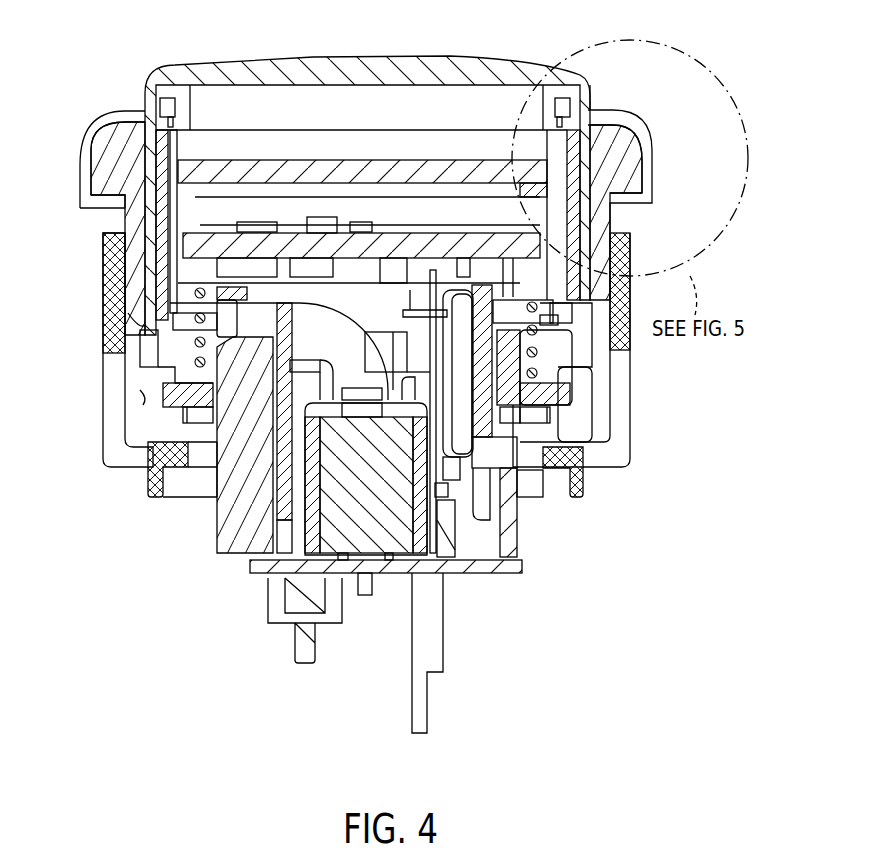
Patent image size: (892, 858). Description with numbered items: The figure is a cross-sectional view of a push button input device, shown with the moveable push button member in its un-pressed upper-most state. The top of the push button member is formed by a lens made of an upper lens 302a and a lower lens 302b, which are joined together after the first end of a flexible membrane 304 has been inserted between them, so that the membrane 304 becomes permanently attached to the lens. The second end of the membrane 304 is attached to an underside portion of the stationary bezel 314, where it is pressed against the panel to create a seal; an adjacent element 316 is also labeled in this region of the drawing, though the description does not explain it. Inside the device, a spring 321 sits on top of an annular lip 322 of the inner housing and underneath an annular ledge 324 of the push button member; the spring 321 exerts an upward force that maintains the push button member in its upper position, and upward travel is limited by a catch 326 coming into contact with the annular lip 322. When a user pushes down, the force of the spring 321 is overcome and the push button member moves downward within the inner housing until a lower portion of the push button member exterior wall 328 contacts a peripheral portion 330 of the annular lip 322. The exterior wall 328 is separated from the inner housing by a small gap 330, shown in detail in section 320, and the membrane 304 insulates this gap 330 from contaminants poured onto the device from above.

The upper lens 302a is at (568, 113).
The lower lens 302b is at (600, 130).
The membrane 304 is at (648, 140).
The bezel 314 is at (640, 178).
The cap side wall 316 is at (565, 250).
The section 320 is at (636, 278).
The spring 321 is at (530, 350).
The annular lip 322 is at (552, 402).
The annular ledge 324 is at (482, 255).
The catch 326 is at (490, 428).
The push button member exterior wall 328 is at (147, 330).
The gap 330 is at (147, 390).